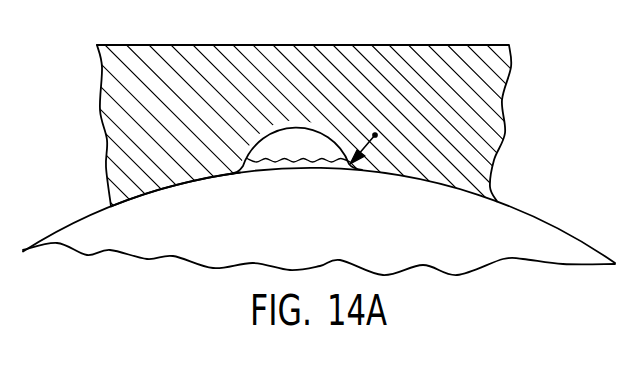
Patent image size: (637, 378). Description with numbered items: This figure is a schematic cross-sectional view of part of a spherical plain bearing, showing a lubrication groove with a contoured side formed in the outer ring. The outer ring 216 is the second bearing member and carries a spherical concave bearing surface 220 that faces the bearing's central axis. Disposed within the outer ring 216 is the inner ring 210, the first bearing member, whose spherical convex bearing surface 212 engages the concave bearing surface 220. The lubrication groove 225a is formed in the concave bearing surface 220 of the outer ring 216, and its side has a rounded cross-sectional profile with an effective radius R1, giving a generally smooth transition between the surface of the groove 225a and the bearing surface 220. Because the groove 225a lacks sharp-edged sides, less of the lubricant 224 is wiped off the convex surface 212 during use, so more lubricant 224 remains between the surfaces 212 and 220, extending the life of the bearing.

The outer ring 216 is at (281, 45).
The inner ring 210 is at (319, 218).
The spherical convex bearing surface 212 is at (534, 214).
The spherical concave bearing surface 220 is at (138, 190).
The lubrication groove 225a is at (329, 152).
The lubricant 224 is at (290, 158).
The effective radius R1 is at (372, 147).